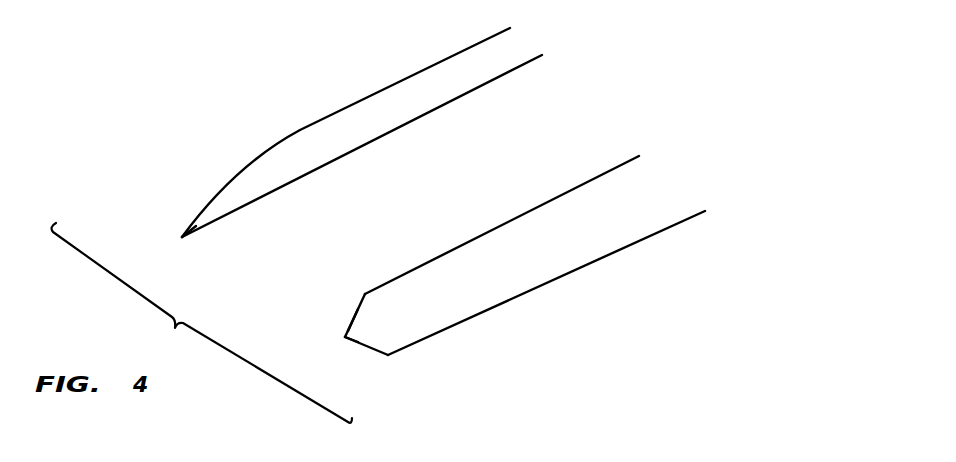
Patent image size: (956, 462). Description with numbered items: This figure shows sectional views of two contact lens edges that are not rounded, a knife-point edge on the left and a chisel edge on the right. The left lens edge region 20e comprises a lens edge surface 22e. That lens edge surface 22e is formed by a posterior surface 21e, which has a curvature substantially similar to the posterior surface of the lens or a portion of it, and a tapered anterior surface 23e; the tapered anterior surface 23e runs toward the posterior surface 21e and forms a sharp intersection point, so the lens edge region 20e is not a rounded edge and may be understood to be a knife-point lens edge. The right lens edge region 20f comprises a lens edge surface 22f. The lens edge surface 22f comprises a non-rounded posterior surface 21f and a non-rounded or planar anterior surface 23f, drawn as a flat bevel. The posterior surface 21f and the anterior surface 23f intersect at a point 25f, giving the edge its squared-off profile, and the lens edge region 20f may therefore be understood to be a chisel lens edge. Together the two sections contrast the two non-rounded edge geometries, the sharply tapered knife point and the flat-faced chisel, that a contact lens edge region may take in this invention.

The lens edge region 20e is at (322, 165).
The posterior surface 21e is at (192, 235).
The lens edge surface 22e is at (186, 231).
The tapered anterior surface 23e is at (206, 206).
The lens edge region 20f is at (481, 265).
The posterior surface 21f is at (373, 350).
The lens edge surface 22f is at (345, 338).
The anterior surface 23f is at (356, 312).
The point 25f is at (347, 336).